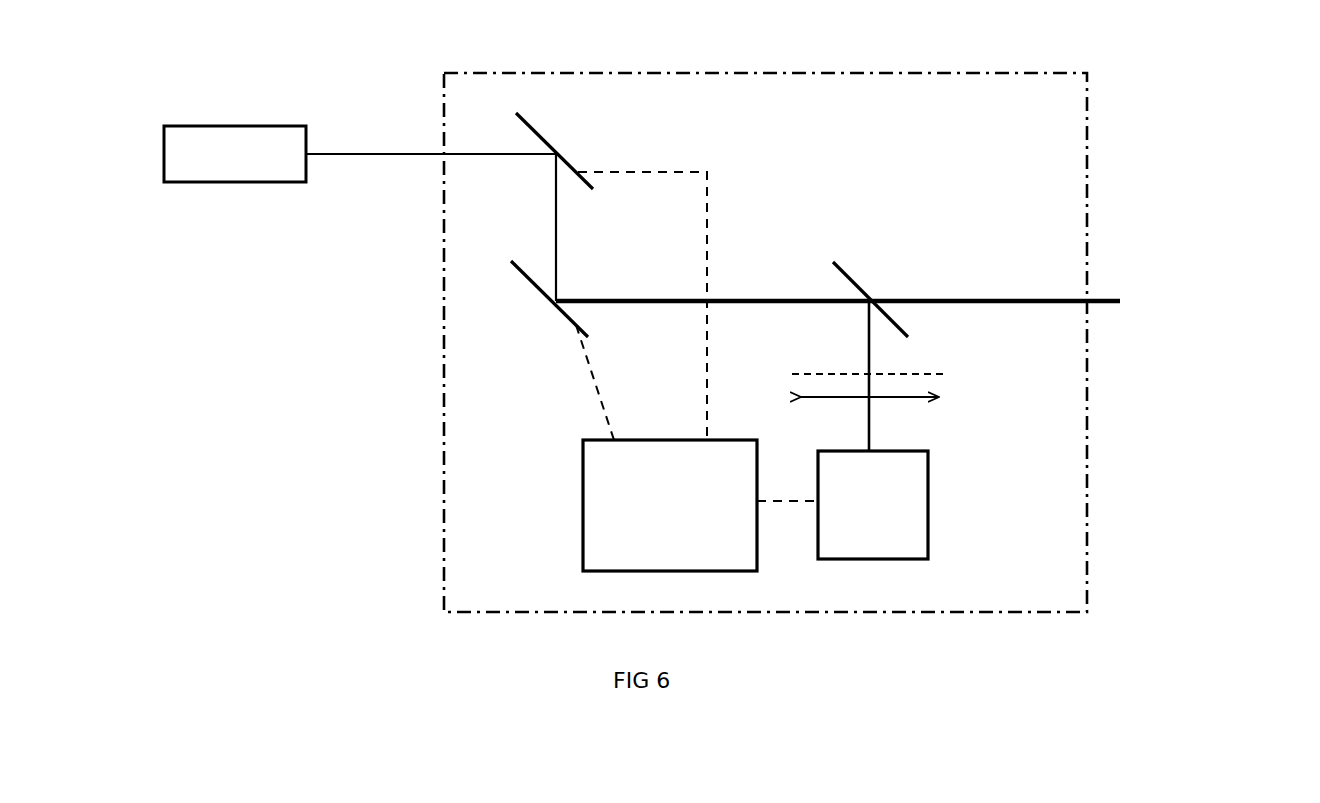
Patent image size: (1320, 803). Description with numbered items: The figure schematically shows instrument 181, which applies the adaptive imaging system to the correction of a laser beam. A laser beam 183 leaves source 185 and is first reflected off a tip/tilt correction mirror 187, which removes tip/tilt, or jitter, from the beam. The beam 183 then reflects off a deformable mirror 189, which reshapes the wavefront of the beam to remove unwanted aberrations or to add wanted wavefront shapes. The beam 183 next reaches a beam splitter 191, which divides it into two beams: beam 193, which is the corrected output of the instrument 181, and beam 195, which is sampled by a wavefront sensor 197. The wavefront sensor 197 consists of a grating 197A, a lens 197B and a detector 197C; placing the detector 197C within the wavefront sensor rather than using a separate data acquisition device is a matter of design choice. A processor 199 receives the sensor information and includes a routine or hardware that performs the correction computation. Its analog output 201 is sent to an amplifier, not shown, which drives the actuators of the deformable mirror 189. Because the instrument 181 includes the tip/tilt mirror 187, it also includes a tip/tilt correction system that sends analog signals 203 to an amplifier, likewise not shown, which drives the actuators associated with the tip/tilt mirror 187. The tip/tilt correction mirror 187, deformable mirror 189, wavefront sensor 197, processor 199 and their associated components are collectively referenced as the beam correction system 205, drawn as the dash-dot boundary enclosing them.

The instrument 181 is at (330, 551).
The laser beam 183 is at (378, 158).
The source 185 is at (208, 172).
The tip/tilt correction mirror 187 is at (540, 128).
The deformable mirror 189 is at (546, 302).
The beam splitter 191 is at (848, 272).
The beam 193 is at (991, 306).
The beam 195 is at (866, 340).
The wavefront sensor 197 is at (974, 461).
The grating 197A is at (950, 374).
The lens 197B is at (927, 403).
The detector 197C is at (918, 505).
The processor 199 is at (678, 556).
The analog output 201 is at (600, 396).
The analog signals 203 is at (708, 200).
The beam correction system 205 is at (887, 73).